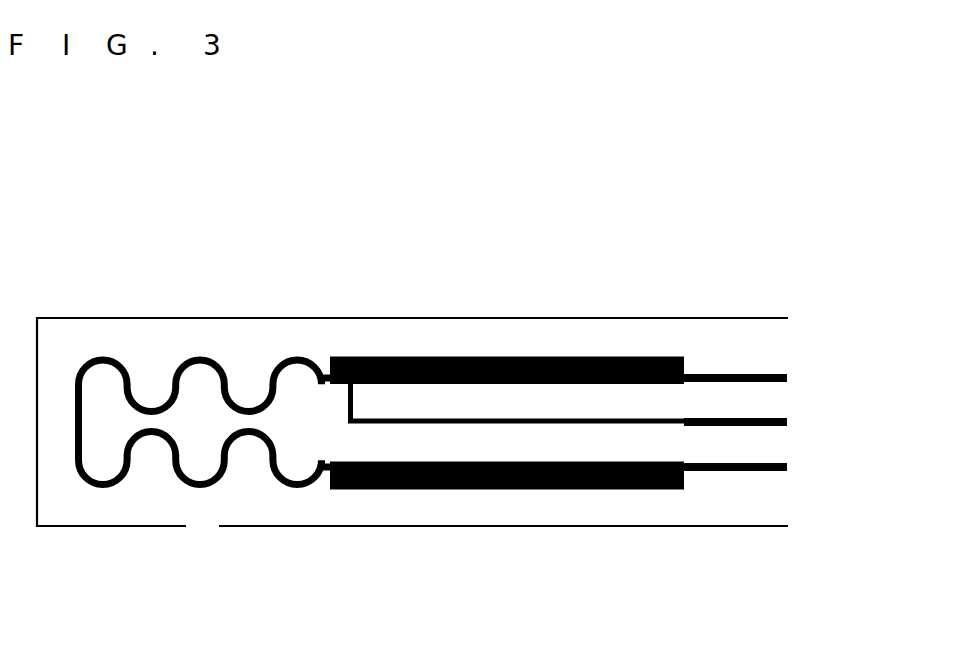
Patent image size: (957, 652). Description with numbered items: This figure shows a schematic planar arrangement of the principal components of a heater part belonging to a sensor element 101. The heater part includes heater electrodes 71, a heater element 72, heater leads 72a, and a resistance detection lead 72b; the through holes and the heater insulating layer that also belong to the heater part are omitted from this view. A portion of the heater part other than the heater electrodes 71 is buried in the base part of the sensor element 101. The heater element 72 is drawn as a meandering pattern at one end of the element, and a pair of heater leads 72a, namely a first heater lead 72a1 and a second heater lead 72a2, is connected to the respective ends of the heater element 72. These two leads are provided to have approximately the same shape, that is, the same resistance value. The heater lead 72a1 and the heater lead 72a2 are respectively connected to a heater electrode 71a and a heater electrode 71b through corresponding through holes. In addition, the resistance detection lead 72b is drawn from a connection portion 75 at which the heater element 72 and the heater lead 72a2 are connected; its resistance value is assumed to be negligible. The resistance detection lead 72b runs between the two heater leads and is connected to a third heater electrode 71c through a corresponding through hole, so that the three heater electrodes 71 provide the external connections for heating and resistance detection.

The sensor element 101 is at (91, 316).
The heater element 72 is at (328, 493).
The heater leads 72a is at (507, 424).
The heater lead 72a1 is at (516, 490).
The heater lead 72a2 is at (525, 355).
The resistance detection lead 72b is at (525, 423).
The connection portion 75 is at (344, 389).
The heater electrodes 71 is at (786, 422).
The heater electrode 71a is at (786, 465).
The heater electrode 71b is at (786, 378).
The heater electrode 71c is at (786, 418).